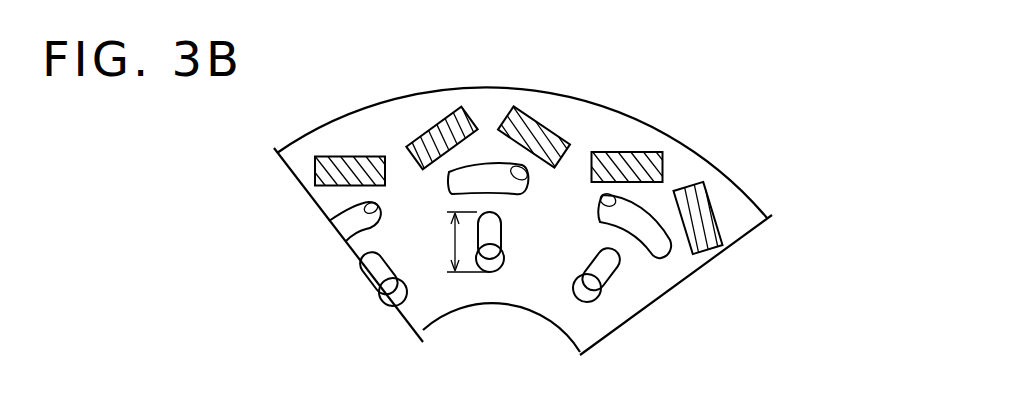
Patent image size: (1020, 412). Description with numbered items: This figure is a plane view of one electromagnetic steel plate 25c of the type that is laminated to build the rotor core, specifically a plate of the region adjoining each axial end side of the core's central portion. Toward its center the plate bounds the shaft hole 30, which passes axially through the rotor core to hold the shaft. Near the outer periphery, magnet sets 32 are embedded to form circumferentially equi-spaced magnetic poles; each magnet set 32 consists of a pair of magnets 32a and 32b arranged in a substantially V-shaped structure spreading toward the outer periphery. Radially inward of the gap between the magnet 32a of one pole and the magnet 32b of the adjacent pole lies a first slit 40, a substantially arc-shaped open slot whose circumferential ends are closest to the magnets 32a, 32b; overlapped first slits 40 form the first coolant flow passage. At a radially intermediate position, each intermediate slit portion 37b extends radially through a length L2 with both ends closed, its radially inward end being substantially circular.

The electromagnetic steel plate 25c is at (692, 152).
The shaft hole 30 is at (525, 313).
The magnet set 32 is at (552, 144).
The magnet 32a is at (346, 157).
The magnet 32b is at (525, 123).
The intermediate slit portion 37b is at (379, 292).
The first slit 40 is at (374, 206).
The length of intermediate slit portion L2 is at (455, 242).